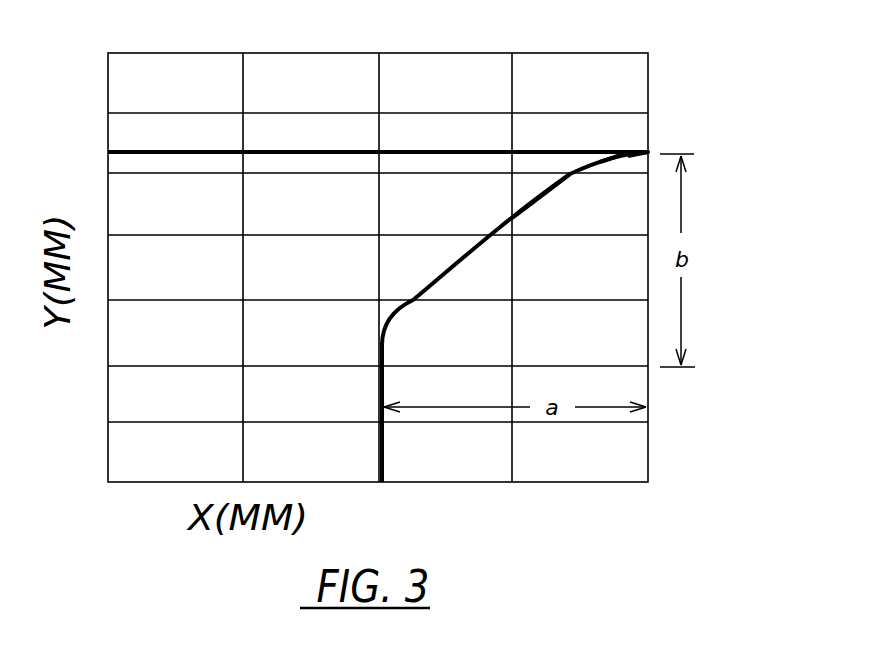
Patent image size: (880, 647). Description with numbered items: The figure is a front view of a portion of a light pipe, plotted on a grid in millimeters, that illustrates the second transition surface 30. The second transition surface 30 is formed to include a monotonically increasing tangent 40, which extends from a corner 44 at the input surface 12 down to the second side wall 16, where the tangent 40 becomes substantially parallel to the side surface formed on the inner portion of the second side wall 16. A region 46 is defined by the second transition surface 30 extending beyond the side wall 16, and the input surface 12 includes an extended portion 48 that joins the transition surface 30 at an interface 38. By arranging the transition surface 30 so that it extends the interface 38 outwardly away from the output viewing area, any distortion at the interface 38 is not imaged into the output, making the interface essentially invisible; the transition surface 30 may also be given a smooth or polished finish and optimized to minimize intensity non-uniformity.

The input surface 12 is at (313, 152).
The second side wall 16 is at (384, 458).
The second transition surface 30 is at (476, 261).
The interface 38 is at (638, 157).
The monotonically increasing tangent 40 is at (560, 189).
The corner 44 is at (612, 158).
The region 46 is at (482, 190).
The extended portion 48 is at (582, 153).